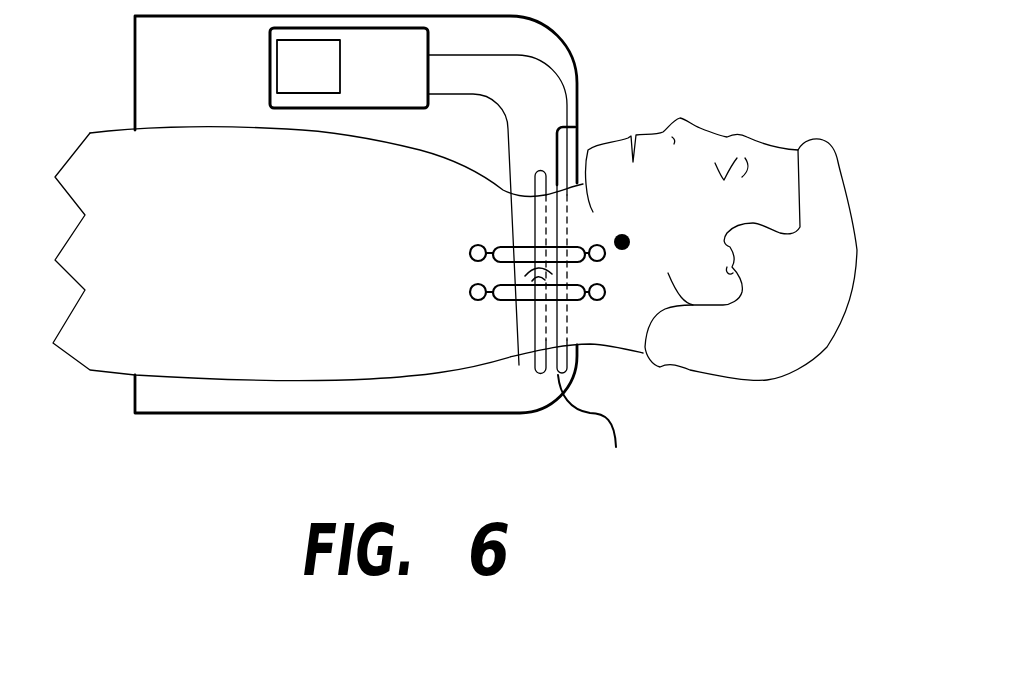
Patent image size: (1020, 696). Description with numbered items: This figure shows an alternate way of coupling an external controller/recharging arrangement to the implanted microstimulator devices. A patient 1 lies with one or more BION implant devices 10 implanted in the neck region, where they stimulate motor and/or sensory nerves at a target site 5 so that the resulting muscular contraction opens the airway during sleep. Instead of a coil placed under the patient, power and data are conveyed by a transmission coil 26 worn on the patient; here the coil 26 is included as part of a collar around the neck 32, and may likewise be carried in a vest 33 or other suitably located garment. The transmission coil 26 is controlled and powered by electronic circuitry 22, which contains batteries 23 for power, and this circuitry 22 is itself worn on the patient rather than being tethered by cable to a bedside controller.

The patient 1 is at (170, 261).
The target site 5 is at (627, 237).
The BION implant device 10 is at (470, 245).
The electronic circuitry 22 is at (418, 196).
The batteries 23 is at (308, 66).
The transmission coil 26 is at (595, 433).
The collar around the neck 32 is at (567, 128).
The vest 33 is at (213, 81).